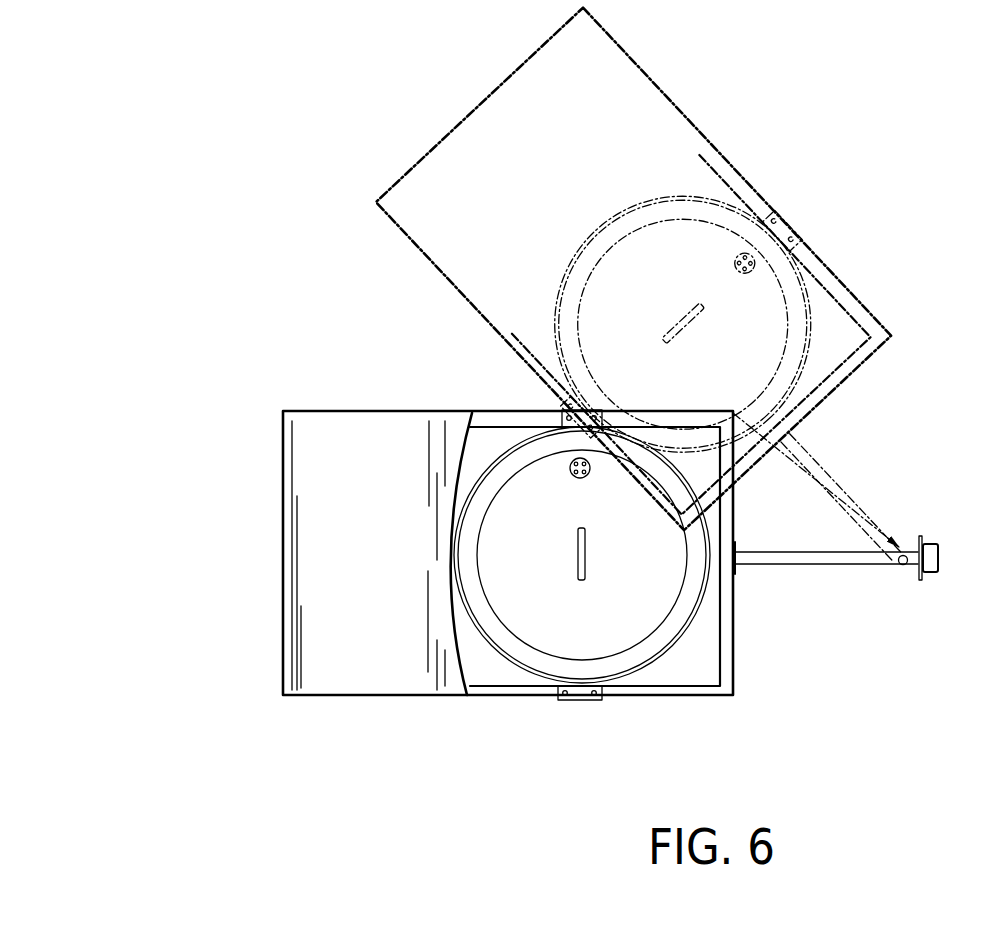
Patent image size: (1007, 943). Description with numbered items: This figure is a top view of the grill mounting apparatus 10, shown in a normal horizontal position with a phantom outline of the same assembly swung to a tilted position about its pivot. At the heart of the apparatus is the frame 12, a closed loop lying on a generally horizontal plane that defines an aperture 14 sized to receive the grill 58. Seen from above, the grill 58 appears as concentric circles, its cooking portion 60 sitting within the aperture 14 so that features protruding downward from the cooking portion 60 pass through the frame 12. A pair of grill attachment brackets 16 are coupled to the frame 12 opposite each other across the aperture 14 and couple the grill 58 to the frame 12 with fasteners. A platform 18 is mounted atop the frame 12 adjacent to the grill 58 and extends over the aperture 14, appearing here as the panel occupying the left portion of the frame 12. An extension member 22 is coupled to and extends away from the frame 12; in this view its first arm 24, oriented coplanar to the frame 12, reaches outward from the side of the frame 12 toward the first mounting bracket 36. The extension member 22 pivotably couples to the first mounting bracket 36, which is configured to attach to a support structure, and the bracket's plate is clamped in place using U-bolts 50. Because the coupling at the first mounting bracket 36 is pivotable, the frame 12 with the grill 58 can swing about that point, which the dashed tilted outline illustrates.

The grill mounting apparatus 10 is at (288, 385).
The frame 12 is at (508, 698).
The aperture 14 is at (681, 661).
The grill attachment brackets 16 is at (583, 410).
The platform 18 is at (305, 585).
The extension member 22 is at (823, 568).
The first arm 24 is at (752, 558).
The first mounting bracket 36 is at (921, 578).
The U-bolts 50 is at (940, 558).
The grill 58 is at (490, 659).
The cooking portion 60 is at (492, 587).